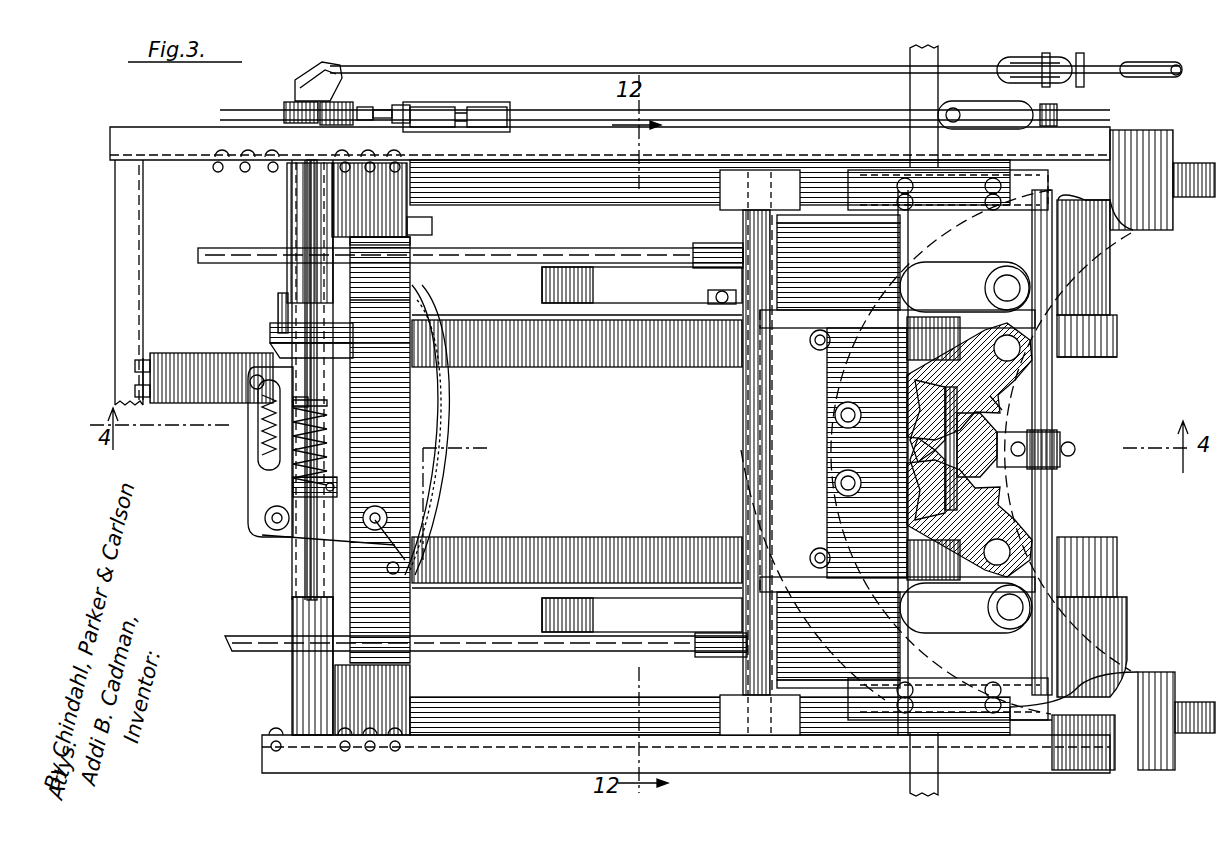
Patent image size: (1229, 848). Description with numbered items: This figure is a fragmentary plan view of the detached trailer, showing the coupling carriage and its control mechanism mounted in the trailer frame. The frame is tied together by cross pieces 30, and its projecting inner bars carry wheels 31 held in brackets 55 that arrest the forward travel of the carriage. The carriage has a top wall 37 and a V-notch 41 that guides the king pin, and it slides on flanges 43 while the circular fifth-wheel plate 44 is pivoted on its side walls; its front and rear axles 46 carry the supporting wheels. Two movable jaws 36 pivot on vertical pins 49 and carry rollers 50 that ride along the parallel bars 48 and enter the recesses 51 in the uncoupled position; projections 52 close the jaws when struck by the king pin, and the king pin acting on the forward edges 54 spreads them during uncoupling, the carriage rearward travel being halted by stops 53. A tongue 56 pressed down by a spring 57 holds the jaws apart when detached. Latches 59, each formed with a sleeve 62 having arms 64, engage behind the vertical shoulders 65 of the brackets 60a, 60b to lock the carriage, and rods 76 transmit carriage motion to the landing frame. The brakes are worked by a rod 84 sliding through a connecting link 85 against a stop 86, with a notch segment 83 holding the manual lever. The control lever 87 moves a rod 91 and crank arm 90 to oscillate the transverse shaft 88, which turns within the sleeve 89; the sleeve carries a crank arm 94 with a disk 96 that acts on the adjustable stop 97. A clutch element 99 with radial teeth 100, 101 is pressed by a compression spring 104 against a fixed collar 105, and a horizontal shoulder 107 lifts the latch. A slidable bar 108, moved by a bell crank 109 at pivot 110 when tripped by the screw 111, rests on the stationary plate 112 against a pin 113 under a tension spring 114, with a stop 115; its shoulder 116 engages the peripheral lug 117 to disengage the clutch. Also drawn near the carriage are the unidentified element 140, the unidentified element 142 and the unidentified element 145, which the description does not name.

The cross pieces 30 is at (371, 449).
The wheels 31 is at (1193, 700).
The movable jaws 36 is at (1092, 770).
The top wall 37 is at (897, 452).
The V-notch 41 is at (1050, 518).
The flanges 43 is at (688, 684).
The circular plate 44 is at (1112, 302).
The axles 46 is at (1050, 410).
The parallel bars 48 is at (577, 451).
The vertical pins 49 is at (838, 422).
The rollers 50 is at (1032, 355).
The recesses 51 is at (968, 335).
The projections 52 is at (920, 448).
The stops 53 is at (432, 228).
The forward edges 54 is at (1009, 413).
The brackets 55 is at (1133, 228).
The tongue 56 is at (1010, 448).
The spring 57 is at (978, 548).
The latches 59 is at (642, 449).
The bracket 60a is at (305, 243).
The bracket 60b is at (296, 690).
The sleeve 62 is at (972, 104).
The arms 64 is at (830, 316).
The vertical shoulders 65 is at (293, 611).
The rods 76 is at (468, 637).
The notch segment 83 is at (1080, 107).
The rod 84 is at (768, 110).
The connecting link 85 is at (487, 108).
The stop 86 is at (447, 110).
The lever 87 is at (1133, 62).
The transverse shaft 88 is at (303, 587).
The sleeve 89 is at (296, 207).
The crank arm 90 is at (305, 78).
The rod 91 is at (494, 68).
The crank arm 94 is at (337, 102).
The disk 96 is at (340, 303).
The adjustable stop 97 is at (400, 106).
The clutch element 99 is at (272, 355).
The radial teeth 100 is at (355, 345).
The radial teeth 101 is at (355, 325).
The compression spring 104 is at (420, 400).
The fixed collar 105 is at (275, 520).
The horizontal shoulder 107 is at (285, 300).
The slidable bar 108 is at (270, 492).
The bell crank 109 is at (410, 440).
The pivot 110 is at (425, 515).
The trip screw 111 is at (715, 305).
The stationary plate 112 is at (185, 398).
The pin 113 is at (140, 375).
The tension spring 114 is at (258, 442).
The stop 115 is at (393, 580).
The shoulder 116 is at (258, 378).
The peripheral lug 117 is at (1012, 290).
The block 140 is at (860, 626).
The bearing cap 142 is at (912, 178).
The post 145 is at (742, 698).